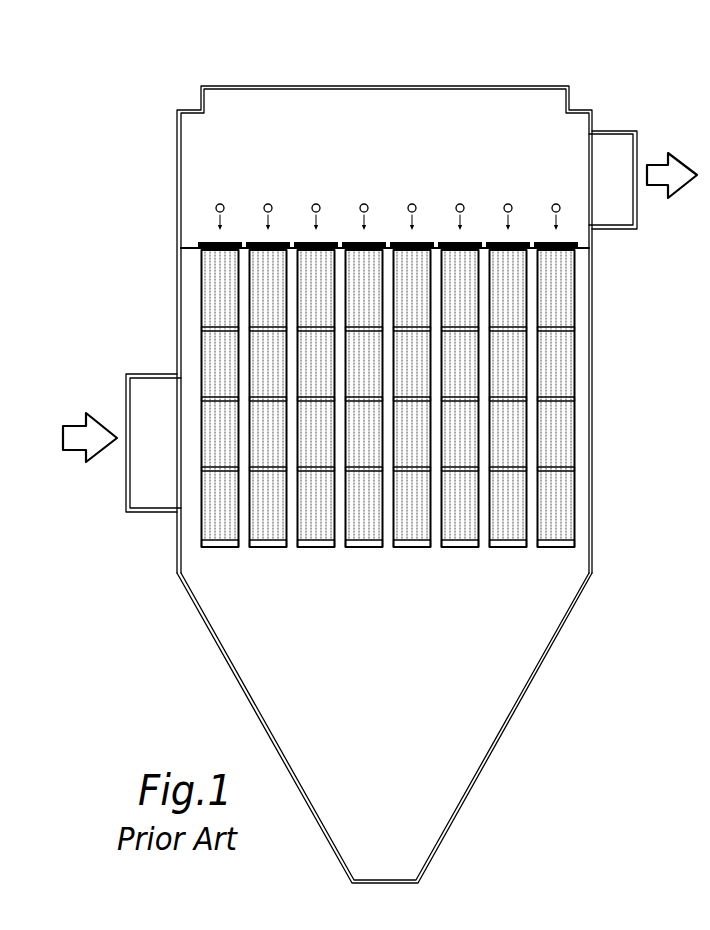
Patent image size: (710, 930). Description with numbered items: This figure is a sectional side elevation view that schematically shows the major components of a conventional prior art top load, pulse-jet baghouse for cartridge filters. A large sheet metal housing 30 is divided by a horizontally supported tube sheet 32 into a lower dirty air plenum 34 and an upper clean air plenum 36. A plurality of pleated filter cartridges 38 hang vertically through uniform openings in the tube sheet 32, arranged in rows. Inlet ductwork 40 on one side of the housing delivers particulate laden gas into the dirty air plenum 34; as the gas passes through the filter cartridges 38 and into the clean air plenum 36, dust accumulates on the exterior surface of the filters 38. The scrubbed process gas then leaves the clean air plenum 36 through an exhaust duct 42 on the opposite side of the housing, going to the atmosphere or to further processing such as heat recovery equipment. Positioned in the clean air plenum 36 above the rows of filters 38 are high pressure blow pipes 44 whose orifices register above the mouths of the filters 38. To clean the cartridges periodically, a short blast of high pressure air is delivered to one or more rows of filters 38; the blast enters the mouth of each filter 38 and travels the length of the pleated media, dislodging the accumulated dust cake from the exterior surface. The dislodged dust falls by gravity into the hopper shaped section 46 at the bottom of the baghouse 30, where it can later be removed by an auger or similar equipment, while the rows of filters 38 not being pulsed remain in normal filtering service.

The sheet metal housing 30 is at (122, 162).
The tube sheet 32 is at (193, 245).
The dirty air plenum 34 is at (399, 665).
The clean air plenum 36 is at (381, 152).
The pleated filter cartridges 38 is at (525, 522).
The inlet ductwork 40 is at (148, 512).
The exhaust duct 42 is at (602, 132).
The high pressure blow pipes 44 is at (315, 202).
The hopper shaped section 46 is at (520, 705).